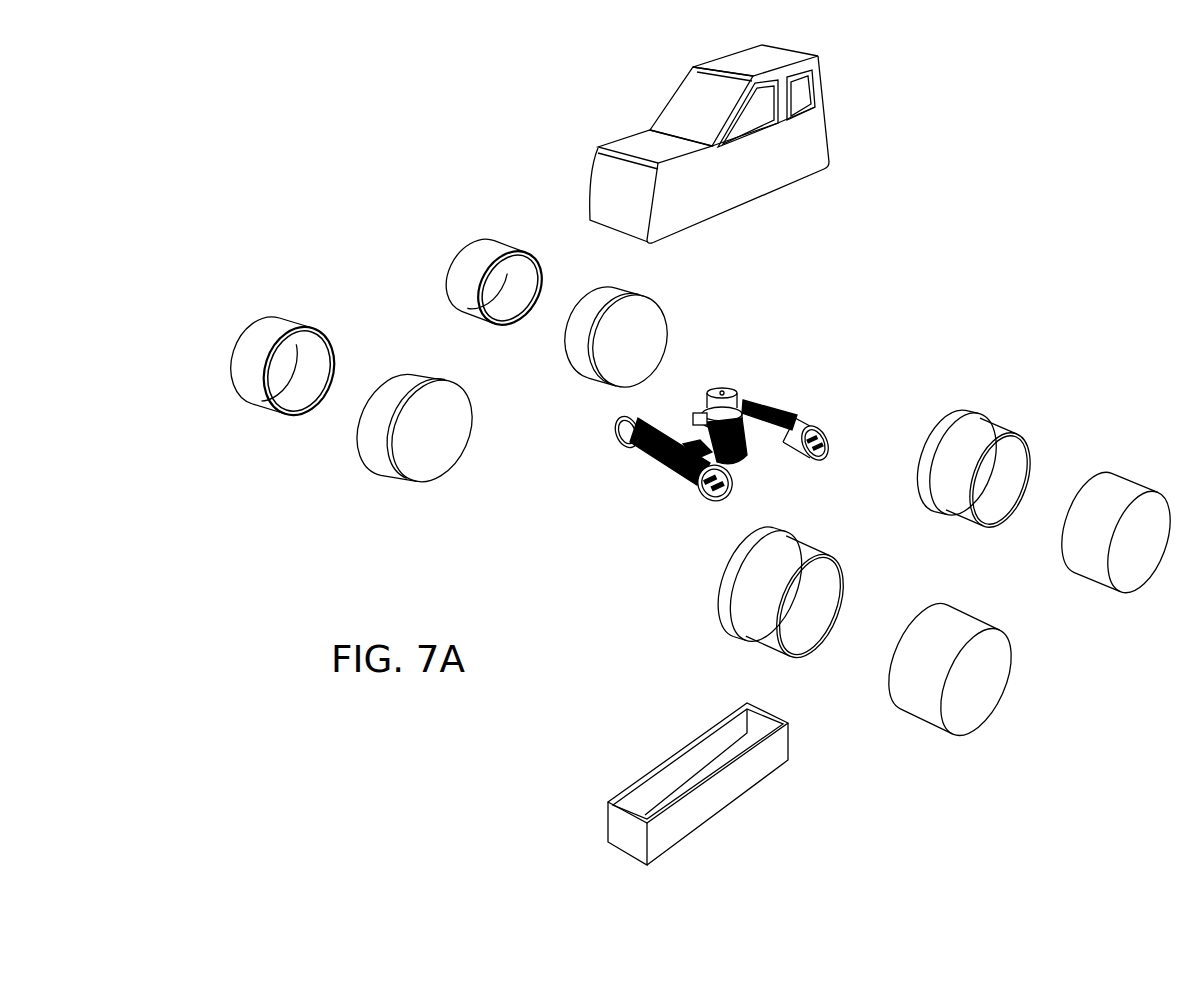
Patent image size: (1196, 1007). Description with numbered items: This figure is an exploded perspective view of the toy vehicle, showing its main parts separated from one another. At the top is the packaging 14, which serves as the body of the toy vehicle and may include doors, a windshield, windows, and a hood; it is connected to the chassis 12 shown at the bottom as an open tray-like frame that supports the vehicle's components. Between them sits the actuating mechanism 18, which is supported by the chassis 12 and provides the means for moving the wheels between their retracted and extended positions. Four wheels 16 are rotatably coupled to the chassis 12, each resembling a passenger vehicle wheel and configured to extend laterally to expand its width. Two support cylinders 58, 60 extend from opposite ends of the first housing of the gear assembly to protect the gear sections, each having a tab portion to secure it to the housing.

The packaging 14 is at (681, 104).
The wheel 16 is at (262, 330).
The support cylinder 60 is at (370, 434).
The support cylinder 58 is at (808, 553).
The actuating mechanism 18 is at (792, 400).
The chassis 12 is at (650, 768).